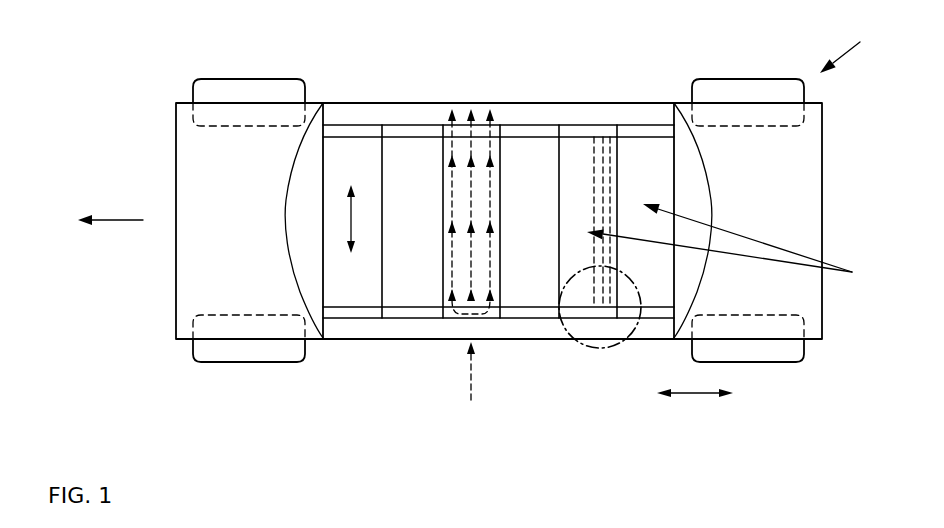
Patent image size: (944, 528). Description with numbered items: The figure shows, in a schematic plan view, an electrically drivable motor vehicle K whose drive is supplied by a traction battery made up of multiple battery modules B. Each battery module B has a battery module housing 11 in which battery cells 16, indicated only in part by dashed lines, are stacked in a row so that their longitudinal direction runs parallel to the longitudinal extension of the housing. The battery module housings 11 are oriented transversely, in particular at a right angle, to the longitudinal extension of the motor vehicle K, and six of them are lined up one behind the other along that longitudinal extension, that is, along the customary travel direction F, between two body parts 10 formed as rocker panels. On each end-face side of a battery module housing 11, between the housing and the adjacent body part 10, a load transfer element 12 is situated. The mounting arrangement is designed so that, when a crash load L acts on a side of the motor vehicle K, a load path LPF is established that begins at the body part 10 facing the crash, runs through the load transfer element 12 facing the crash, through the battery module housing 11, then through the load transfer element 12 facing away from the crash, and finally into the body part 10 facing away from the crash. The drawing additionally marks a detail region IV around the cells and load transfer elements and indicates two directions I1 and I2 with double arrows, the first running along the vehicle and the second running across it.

The body part 10 is at (348, 113).
The battery module housing 11 is at (420, 158).
The load transfer element 12 is at (397, 130).
The battery cells 16 is at (609, 198).
The load path LPF is at (471, 147).
The crash load L is at (471, 377).
The detail view IV is at (598, 346).
The first transverse direction I1 is at (696, 393).
The second transverse direction I2 is at (350, 222).
The travel direction F is at (110, 208).
The battery module B is at (730, 248).
The motor vehicle K is at (850, 45).